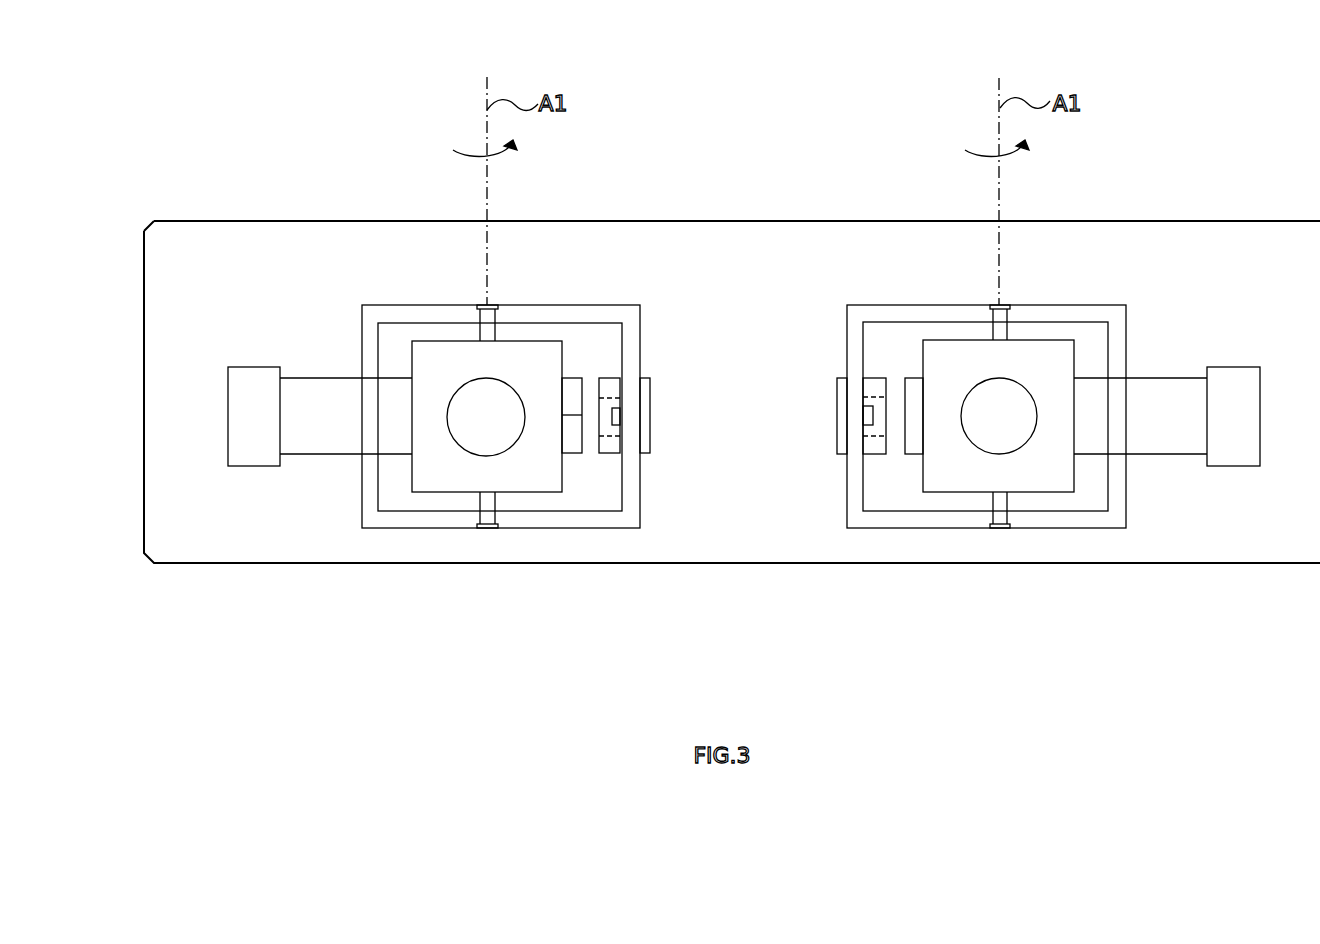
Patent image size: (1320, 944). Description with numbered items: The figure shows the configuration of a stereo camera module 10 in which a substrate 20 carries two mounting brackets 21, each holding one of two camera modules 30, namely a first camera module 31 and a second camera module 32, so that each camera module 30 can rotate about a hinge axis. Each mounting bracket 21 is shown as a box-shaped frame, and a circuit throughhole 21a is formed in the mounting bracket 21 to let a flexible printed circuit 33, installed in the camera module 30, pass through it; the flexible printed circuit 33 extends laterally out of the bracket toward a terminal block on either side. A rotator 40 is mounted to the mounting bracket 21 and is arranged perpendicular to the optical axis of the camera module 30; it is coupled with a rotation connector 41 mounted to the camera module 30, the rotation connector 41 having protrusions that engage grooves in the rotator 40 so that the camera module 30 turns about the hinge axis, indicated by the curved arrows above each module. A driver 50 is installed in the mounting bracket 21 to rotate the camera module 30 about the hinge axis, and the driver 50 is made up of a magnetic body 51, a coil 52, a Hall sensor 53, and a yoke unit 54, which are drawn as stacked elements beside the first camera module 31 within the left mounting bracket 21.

The stereo camera module 10 is at (1196, 94).
The substrate 20 is at (170, 275).
The mounting bracket 21 is at (370, 505).
The circuit throughhole 21a is at (367, 376).
The camera module 30 is at (788, 128).
The first camera module 31 is at (540, 352).
The second camera module 32 is at (950, 360).
The flexible printed circuit 33 is at (293, 415).
The rotator 40 is at (477, 308).
The rotation connector 41 is at (477, 337).
The driver 50 is at (707, 655).
The magnetic body 51 is at (572, 448).
The coil 52 is at (610, 447).
The Hall sensor 53 is at (645, 415).
The yoke unit 54 is at (620, 418).